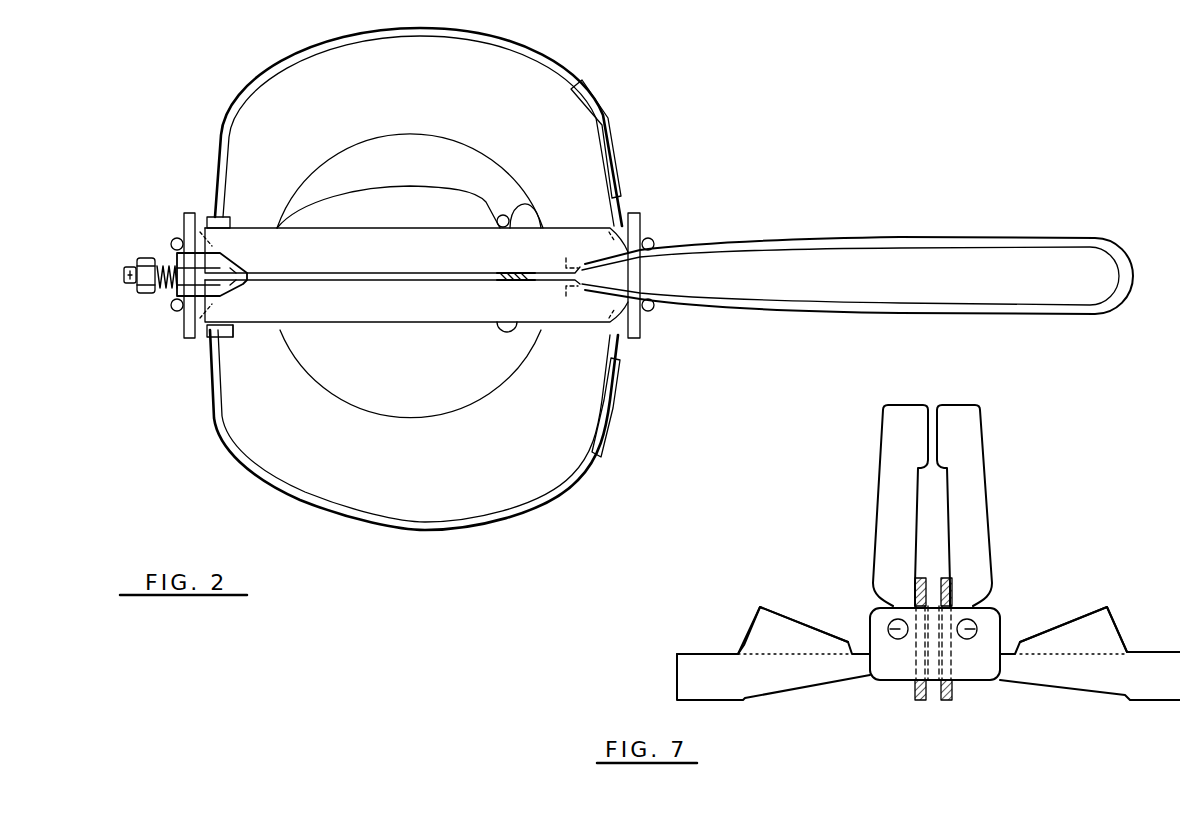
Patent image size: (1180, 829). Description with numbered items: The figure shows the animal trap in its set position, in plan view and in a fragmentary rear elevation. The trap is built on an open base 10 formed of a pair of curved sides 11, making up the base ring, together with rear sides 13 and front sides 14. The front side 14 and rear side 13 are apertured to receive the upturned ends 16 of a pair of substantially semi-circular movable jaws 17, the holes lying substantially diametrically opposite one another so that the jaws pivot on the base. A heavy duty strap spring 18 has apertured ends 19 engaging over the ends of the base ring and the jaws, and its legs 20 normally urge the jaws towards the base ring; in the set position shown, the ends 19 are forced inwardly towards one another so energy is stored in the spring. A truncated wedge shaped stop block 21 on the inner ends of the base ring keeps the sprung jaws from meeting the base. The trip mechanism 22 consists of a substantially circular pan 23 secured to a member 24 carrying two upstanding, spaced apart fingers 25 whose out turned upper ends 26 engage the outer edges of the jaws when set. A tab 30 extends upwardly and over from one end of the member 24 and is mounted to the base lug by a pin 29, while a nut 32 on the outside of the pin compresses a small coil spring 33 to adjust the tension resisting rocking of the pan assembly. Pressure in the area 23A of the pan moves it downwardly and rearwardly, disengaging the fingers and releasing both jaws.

In FIG. 2, the open base 10 is at (632, 84).
In FIG. 2, the curved sides 11 is at (237, 86).
In FIG. 7, the curved sides 11 is at (677, 668).
In FIG. 2, the rear sides 13 is at (184, 216).
In FIG. 2, the front sides 14 is at (642, 330).
In FIG. 7, the front sides 14 is at (975, 672).
In FIG. 2, the upturned ends 16 is at (171, 242).
In FIG. 7, the upturned ends 16 is at (886, 622).
In FIG. 2, the movable jaws 17 is at (402, 230).
In FIG. 7, the movable jaws 17 is at (886, 487).
In FIG. 2, the strap spring 18 is at (913, 238).
In FIG. 2, the apertured ends 19 is at (604, 260).
In FIG. 7, the apertured ends 19 is at (950, 583).
In FIG. 2, the legs 20 is at (950, 250).
In FIG. 7, the legs 20 is at (943, 700).
In FIG. 2, the stop block 21 is at (610, 148).
In FIG. 7, the stop block 21 is at (756, 618).
In FIG. 2, the trip mechanism 22 is at (468, 132).
In FIG. 2, the pan 23 is at (356, 156).
In FIG. 2, the pan area 23A is at (452, 396).
In FIG. 2, the member 24 is at (262, 330).
In FIG. 2, the fingers 25 is at (238, 340).
In FIG. 2, the out turned upper ends 26 is at (222, 322).
In FIG. 2, the pin 29 is at (126, 285).
In FIG. 2, the tab 30 is at (214, 266).
In FIG. 2, the nut 32 is at (146, 296).
In FIG. 2, the coil spring 33 is at (160, 266).